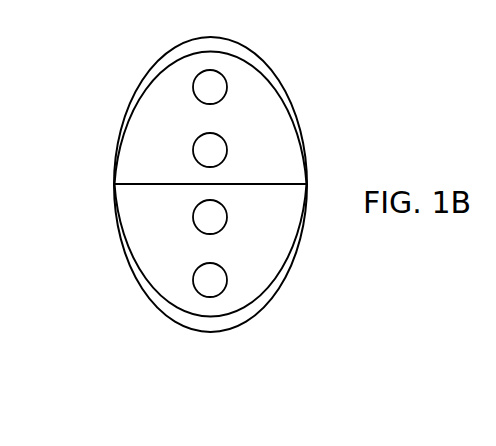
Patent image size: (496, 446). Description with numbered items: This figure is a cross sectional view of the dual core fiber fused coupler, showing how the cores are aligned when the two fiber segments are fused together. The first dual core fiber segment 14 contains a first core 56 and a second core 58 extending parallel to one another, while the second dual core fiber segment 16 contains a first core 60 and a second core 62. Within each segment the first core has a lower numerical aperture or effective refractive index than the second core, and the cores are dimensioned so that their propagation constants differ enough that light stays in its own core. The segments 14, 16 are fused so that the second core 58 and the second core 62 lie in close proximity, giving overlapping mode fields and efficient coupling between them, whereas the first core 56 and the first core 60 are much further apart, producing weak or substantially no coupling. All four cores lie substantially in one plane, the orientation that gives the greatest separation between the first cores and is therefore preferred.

The first dual core fiber segment 14 is at (275, 161).
The second dual core fiber segment 16 is at (155, 225).
The first core 56 is at (227, 79).
The second core 58 is at (193, 152).
The first core 60 is at (193, 273).
The second core 62 is at (225, 223).